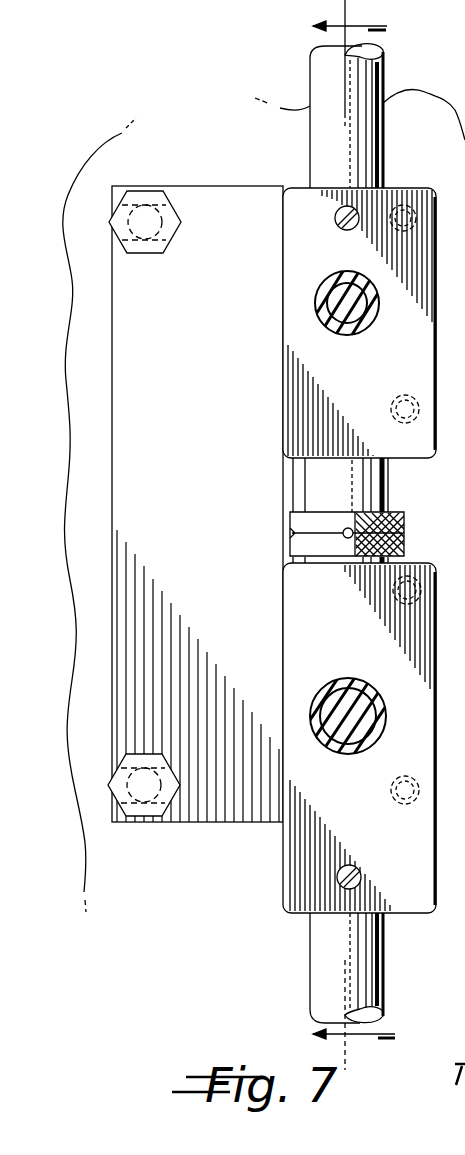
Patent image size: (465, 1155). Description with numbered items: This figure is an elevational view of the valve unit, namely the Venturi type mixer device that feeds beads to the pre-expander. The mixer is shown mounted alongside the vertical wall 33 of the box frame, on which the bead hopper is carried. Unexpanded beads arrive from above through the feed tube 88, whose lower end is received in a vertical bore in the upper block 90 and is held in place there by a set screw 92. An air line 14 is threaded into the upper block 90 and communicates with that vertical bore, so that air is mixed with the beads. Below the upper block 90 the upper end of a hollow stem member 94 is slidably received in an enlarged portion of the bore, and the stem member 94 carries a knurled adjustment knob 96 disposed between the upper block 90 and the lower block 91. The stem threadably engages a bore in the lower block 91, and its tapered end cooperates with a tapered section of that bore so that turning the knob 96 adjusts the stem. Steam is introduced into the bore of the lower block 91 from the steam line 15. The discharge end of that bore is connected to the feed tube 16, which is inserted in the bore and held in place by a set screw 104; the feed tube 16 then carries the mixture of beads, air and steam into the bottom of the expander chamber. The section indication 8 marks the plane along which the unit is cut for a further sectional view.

The vertical wall 33 is at (106, 153).
The feed tube 88 is at (372, 70).
The section line 8- 8 is at (354, 535).
The upper block 90 is at (284, 268).
The set screw 92 is at (336, 214).
The air line 14 is at (345, 334).
The hollow stem member 94 is at (316, 481).
The knurled adjustment knob 96 is at (306, 543).
The lower block 91 is at (284, 601).
The steam line 15 is at (338, 680).
The set screw 104 is at (356, 873).
The feed tube 16 is at (385, 998).